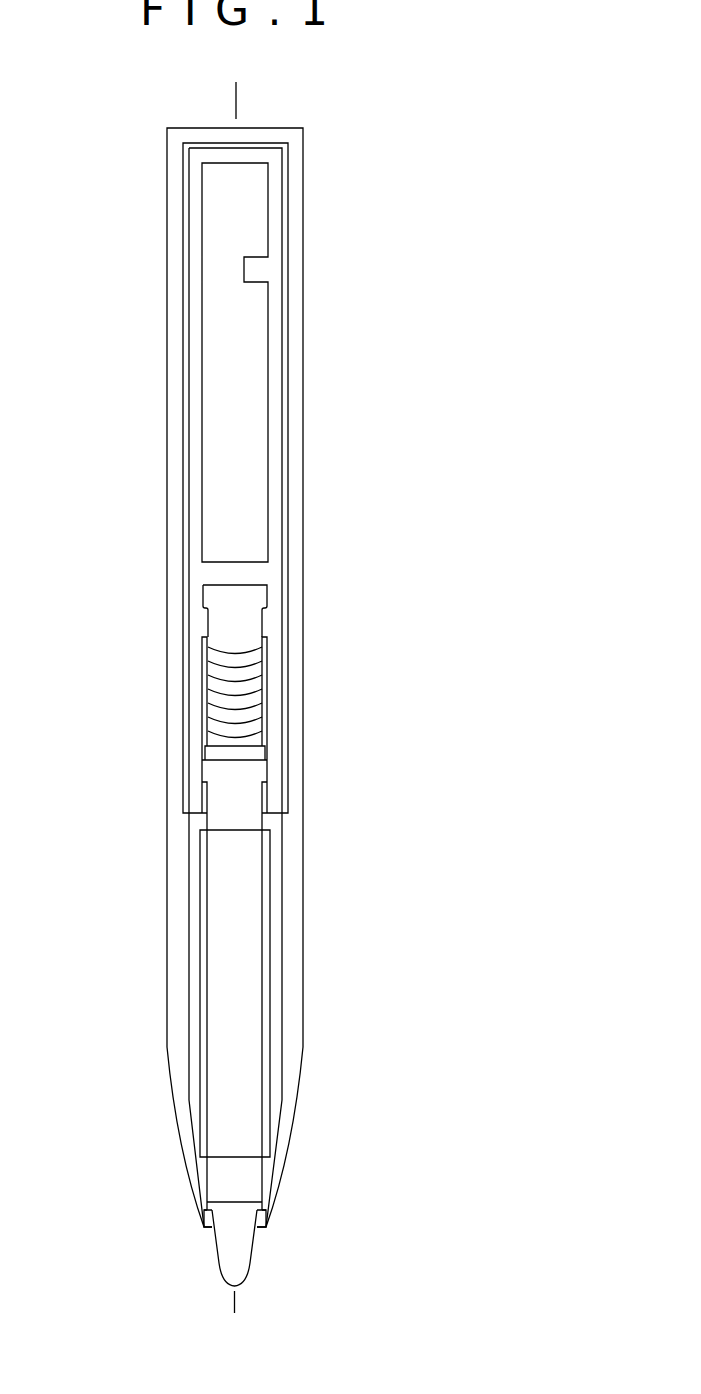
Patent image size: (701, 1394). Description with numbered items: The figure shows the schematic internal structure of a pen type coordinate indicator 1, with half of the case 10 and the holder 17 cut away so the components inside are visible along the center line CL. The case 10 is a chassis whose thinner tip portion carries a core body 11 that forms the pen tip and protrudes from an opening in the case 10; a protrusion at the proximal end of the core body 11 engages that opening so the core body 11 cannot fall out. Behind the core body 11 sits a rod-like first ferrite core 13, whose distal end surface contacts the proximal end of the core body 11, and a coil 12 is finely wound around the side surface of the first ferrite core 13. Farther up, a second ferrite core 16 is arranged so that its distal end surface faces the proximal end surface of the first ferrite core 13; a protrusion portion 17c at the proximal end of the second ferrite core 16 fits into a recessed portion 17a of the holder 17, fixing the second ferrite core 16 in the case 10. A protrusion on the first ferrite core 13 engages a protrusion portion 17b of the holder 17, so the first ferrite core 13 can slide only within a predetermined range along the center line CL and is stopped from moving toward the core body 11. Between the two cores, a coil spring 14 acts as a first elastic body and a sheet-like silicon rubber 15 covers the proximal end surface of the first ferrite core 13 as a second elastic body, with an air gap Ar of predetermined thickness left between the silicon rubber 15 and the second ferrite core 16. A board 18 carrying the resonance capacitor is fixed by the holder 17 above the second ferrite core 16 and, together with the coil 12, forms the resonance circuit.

The pen type coordinate indicator 1 is at (60, 164).
The case 10 is at (303, 253).
The core body 11 is at (242, 1243).
The coil 12 is at (272, 922).
The first ferrite core 13 is at (240, 789).
The coil spring 14 is at (207, 685).
The sheet-like silicon rubber 15 is at (260, 752).
The second ferrite core 16 is at (261, 590).
The holder 17 is at (202, 573).
The recessed portion 17a is at (203, 598).
The protrusion portion 17b is at (202, 806).
The protrusion portion 17c is at (207, 627).
The board 18 is at (218, 364).
The air gap Ar is at (207, 742).
The center line CL is at (237, 104).